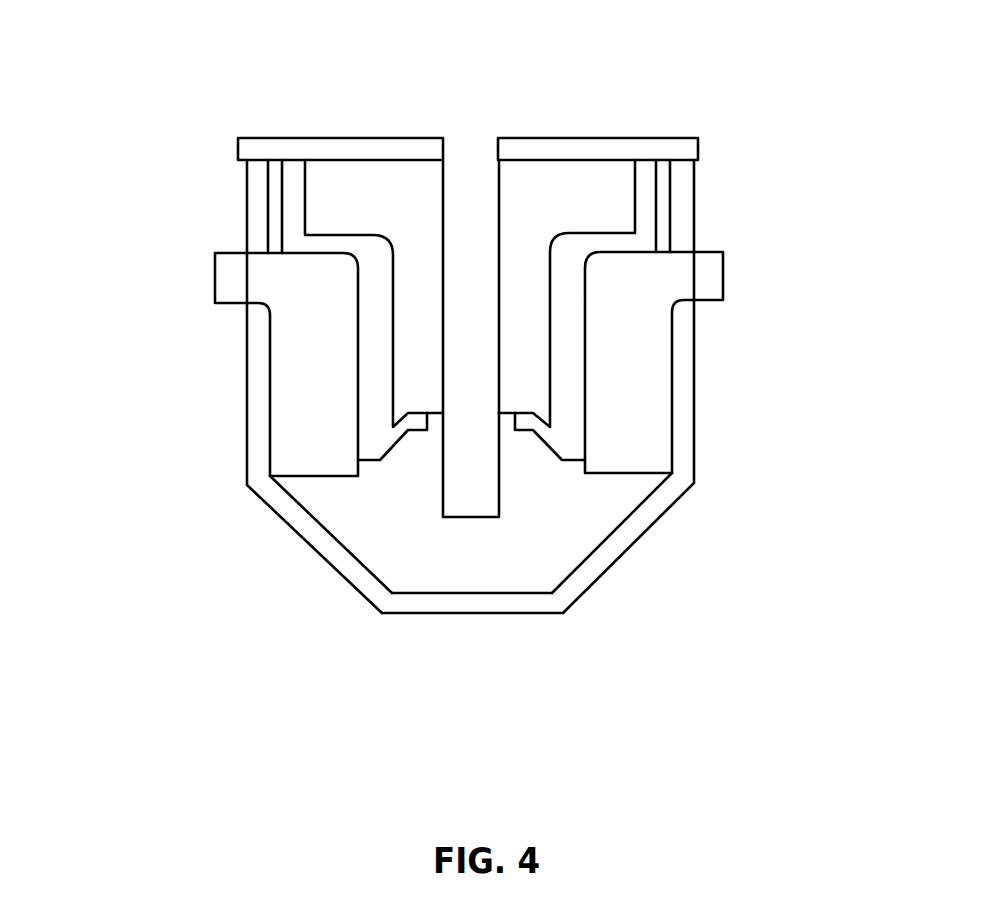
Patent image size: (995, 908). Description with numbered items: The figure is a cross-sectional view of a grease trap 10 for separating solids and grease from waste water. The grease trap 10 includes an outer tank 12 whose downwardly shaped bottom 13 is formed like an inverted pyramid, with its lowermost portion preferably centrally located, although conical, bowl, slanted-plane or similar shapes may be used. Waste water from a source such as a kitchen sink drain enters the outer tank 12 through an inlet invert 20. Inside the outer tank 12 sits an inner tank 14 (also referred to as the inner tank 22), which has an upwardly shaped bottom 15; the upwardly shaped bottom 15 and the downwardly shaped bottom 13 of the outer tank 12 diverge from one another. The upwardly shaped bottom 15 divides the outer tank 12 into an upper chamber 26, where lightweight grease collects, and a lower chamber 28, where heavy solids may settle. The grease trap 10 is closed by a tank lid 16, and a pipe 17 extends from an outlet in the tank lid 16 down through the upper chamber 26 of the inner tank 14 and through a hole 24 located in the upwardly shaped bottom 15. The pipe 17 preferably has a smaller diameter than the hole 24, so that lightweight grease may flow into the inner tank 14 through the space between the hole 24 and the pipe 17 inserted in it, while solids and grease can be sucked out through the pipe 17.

The grease trap 10 is at (98, 145).
The outer tank 12 is at (258, 417).
The downwardly shaped bottom 13 is at (507, 605).
The inner tank 14 is at (295, 241).
The upwardly shaped bottom 15 is at (545, 537).
The tank lid 16 is at (345, 147).
The pipe 17 is at (478, 220).
The inlet invert 20 is at (623, 462).
The inner tank 22 is at (318, 469).
The hole 24 is at (502, 408).
The upper chamber 26 is at (535, 177).
The lower chamber 28 is at (522, 430).